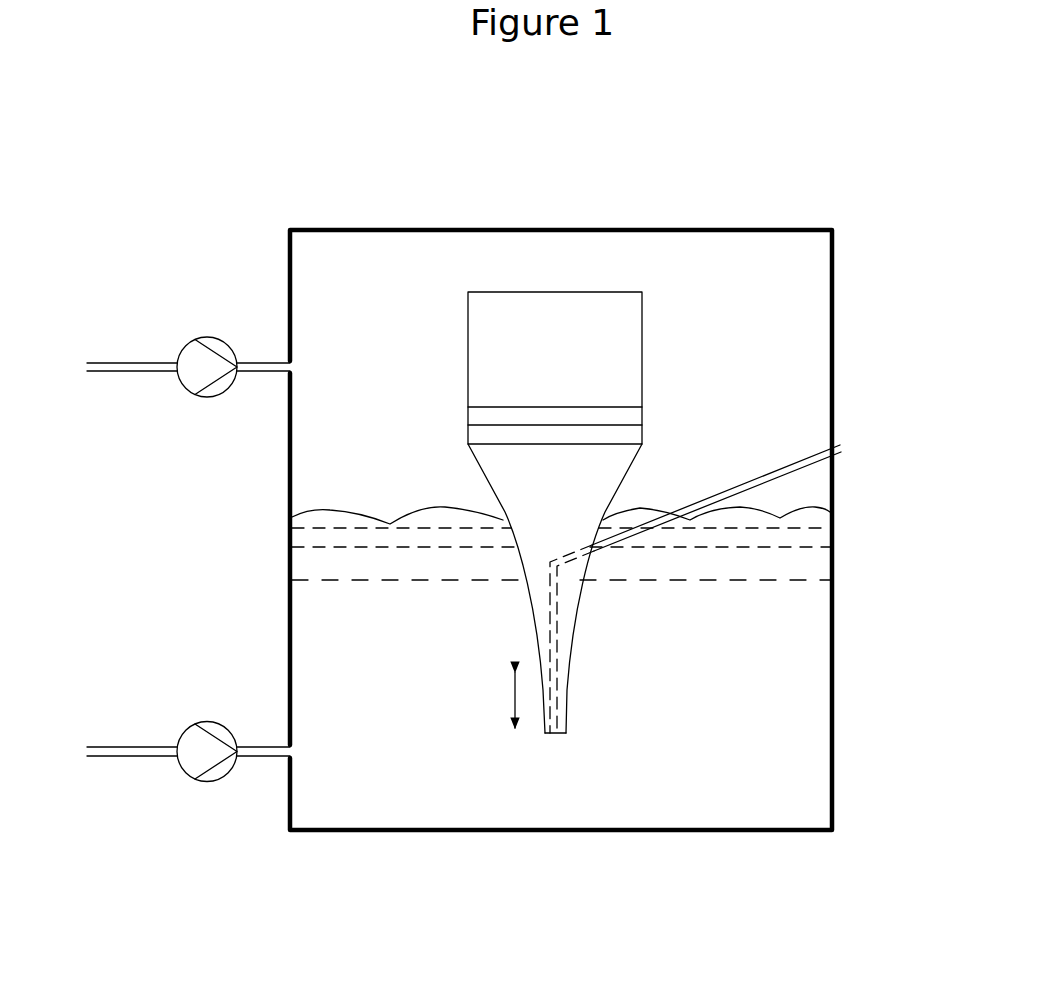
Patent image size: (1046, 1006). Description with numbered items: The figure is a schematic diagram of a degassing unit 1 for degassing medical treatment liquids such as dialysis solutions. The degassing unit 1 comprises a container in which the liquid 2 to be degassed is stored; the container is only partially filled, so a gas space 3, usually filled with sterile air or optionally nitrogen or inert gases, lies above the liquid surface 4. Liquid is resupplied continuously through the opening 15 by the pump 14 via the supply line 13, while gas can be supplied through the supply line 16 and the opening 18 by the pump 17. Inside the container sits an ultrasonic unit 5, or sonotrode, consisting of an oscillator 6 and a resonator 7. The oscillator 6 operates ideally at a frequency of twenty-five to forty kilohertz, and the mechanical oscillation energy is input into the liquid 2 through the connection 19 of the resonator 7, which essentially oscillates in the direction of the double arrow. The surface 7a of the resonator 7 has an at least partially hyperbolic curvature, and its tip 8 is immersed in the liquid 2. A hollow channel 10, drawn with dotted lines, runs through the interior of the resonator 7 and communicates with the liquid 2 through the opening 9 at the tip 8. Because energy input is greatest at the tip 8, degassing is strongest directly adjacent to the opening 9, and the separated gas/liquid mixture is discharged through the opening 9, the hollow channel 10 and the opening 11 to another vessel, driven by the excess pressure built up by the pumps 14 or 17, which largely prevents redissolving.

The degassing unit 1 is at (755, 193).
The liquid 2 is at (785, 540).
The gas space 3 is at (792, 343).
The liquid surface 4 is at (340, 509).
The ultrasonic unit 5 is at (686, 354).
The oscillator 6 is at (541, 289).
The resonator 7 is at (494, 473).
The surface 7a is at (620, 483).
The tip 8 is at (572, 733).
The opening 9 is at (550, 736).
The hollow channel 10 is at (558, 621).
The opening 11 is at (842, 446).
The supply line 13 is at (127, 747).
The pump 14 is at (213, 722).
The opening 15 is at (293, 750).
The supply line 16 is at (123, 363).
The pump 17 is at (208, 339).
The opening 18 is at (297, 367).
The connection 19 is at (643, 430).